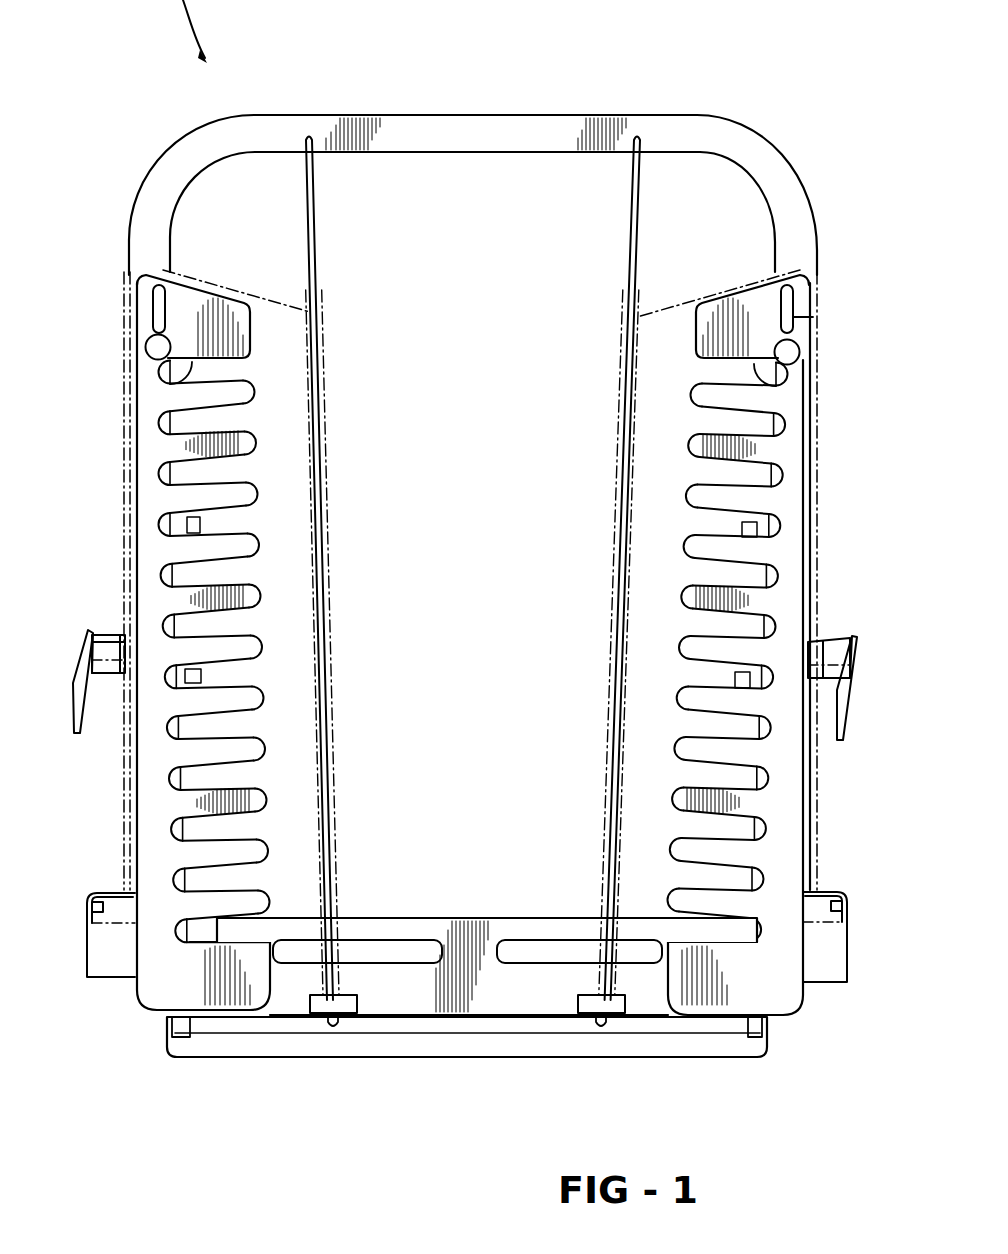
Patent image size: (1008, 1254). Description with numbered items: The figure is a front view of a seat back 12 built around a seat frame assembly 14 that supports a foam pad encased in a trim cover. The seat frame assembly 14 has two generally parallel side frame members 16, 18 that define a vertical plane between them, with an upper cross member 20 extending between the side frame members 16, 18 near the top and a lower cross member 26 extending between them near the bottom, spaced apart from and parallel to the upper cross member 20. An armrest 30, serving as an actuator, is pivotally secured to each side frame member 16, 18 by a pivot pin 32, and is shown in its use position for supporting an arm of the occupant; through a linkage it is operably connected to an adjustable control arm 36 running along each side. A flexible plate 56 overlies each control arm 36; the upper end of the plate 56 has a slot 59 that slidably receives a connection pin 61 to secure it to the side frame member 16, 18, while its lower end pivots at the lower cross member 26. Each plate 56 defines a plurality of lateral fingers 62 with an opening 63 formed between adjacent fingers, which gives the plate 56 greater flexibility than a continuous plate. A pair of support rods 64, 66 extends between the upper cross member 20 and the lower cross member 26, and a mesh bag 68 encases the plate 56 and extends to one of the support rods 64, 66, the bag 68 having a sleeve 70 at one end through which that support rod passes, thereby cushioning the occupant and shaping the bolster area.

The seat back 12 is at (476, 152).
The seat frame assembly 14 is at (148, 168).
The side frame member 16 is at (128, 262).
The side frame member 18 is at (818, 262).
The upper cross member 20 is at (530, 117).
The lower cross member 26 is at (422, 1046).
The armrest 30 is at (84, 706).
The pivot pin 32 is at (818, 650).
The control arm 36 is at (136, 528).
The plate 56 is at (200, 363).
The slot 59 is at (813, 317).
The connection pin 61 is at (790, 351).
The lateral fingers 62 is at (258, 498).
The opening 63 is at (230, 677).
The support rod 64 is at (328, 620).
The support rod 66 is at (622, 512).
The mesh bag 68 is at (260, 294).
The sleeve 70 is at (320, 350).